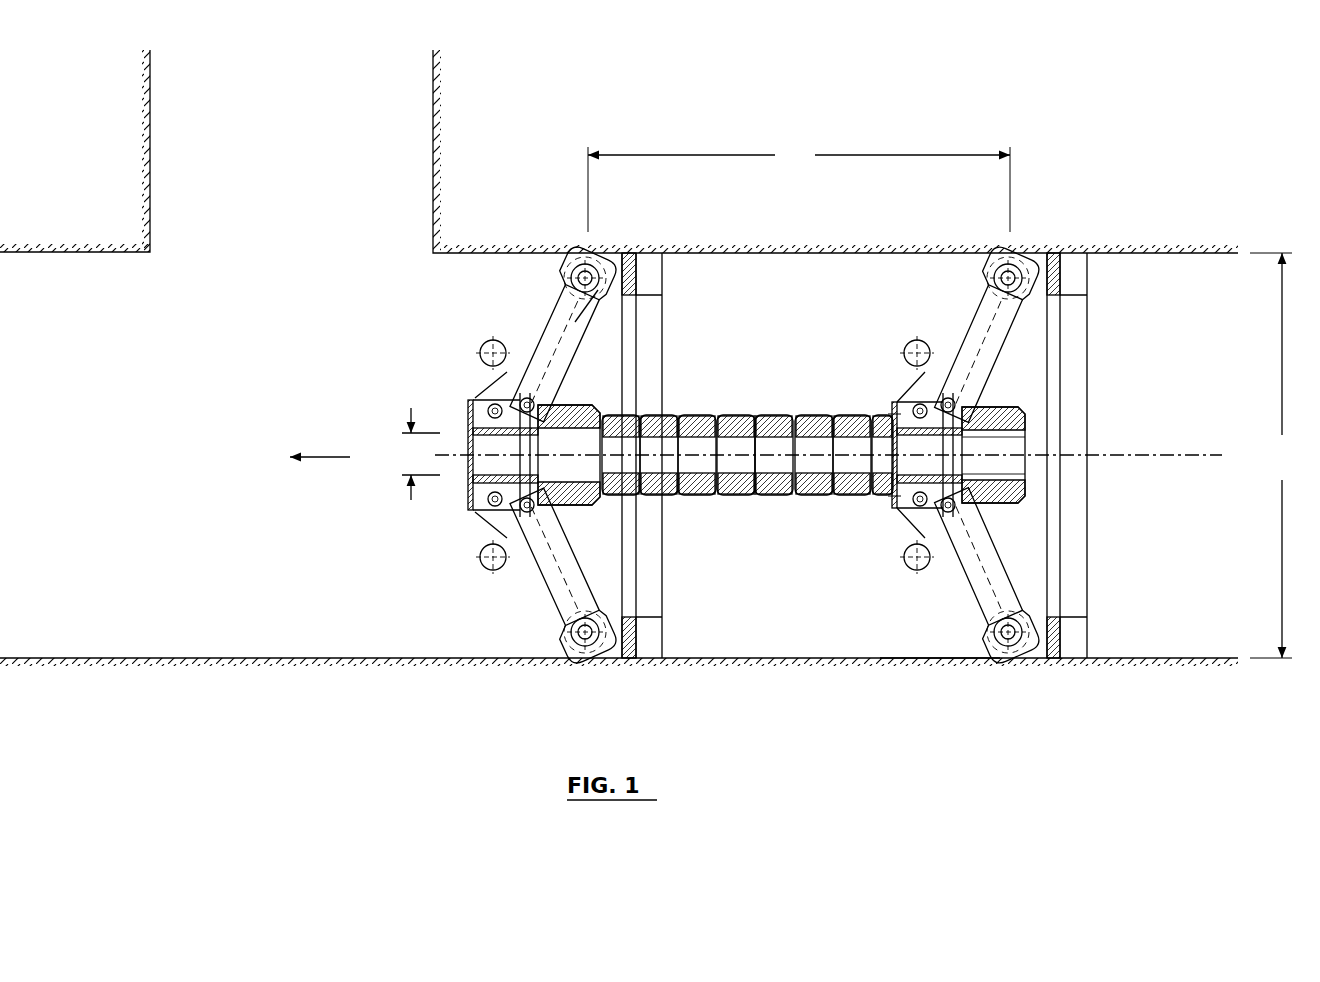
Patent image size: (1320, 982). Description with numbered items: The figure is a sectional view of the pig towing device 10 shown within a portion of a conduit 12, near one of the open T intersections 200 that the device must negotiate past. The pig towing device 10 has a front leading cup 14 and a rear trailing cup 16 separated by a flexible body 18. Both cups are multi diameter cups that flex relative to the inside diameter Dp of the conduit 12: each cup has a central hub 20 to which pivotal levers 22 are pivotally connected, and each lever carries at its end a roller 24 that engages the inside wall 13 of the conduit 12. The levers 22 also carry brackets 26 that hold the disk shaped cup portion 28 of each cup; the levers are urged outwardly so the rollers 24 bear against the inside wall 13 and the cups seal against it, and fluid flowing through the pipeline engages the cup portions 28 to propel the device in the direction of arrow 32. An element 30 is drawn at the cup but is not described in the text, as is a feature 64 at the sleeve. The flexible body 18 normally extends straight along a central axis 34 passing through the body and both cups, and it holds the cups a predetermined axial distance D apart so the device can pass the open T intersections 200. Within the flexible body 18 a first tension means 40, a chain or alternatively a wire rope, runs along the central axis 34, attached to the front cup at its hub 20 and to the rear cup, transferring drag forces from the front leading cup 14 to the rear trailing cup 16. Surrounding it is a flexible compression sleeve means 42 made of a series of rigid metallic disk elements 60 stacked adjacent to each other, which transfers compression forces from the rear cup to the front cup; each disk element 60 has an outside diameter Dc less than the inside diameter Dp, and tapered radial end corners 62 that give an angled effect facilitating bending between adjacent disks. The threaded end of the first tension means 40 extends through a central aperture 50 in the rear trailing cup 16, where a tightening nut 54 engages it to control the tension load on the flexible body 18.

The open T intersections 200 is at (312, 256).
The pig towing device 10 is at (437, 605).
The conduit 12 is at (695, 660).
The inside wall 13 is at (922, 650).
The front leading cup 14 is at (475, 400).
The rear trailing cup 16 is at (985, 352).
The flexible body 18 is at (758, 407).
The hub 20 is at (470, 492).
The pivotal levers 22 is at (525, 318).
The roller 24 is at (565, 268).
The brackets 26 is at (578, 323).
The disk shaped cup portion 28 is at (650, 270).
The second plate 30 is at (663, 330).
The arrow 32 is at (324, 457).
The central axis 34 is at (1185, 455).
The first tension means 40 is at (747, 462).
The flexible compression sleeve means 42 is at (805, 407).
The central aperture 50 is at (893, 500).
The tightening nut 54 is at (1020, 468).
The disk elements 60 is at (725, 495).
The radial end corners 62 is at (678, 415).
The segment interface 64 is at (757, 495).
The axial distance D is at (799, 188).
The outside diameter of disk elements Dc is at (417, 454).
The inside diameter of conduit Dp is at (1272, 455).